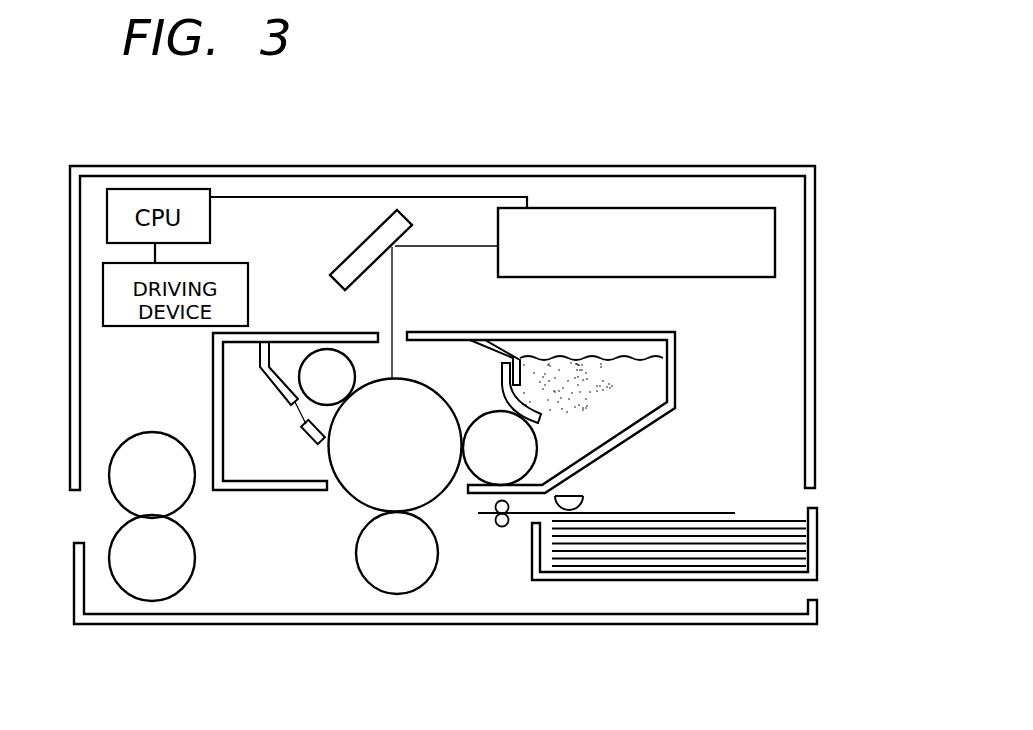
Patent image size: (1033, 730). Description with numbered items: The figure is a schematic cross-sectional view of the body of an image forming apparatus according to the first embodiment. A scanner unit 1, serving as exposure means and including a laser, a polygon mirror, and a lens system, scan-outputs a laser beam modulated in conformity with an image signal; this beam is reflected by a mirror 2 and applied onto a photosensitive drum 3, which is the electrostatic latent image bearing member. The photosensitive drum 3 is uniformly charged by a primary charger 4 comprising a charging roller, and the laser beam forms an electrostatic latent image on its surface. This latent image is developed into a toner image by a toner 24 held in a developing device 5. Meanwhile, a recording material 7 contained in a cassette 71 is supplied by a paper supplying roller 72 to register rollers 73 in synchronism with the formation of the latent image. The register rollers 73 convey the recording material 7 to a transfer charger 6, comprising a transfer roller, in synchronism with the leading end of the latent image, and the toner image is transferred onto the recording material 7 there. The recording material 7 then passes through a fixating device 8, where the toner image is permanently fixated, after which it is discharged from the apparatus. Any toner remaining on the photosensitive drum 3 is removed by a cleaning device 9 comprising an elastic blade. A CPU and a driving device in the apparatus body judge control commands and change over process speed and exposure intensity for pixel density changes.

The scanner unit 1 is at (610, 208).
The mirror 2 is at (373, 225).
The photosensitive drum 3 is at (350, 495).
The primary charger 4 is at (293, 377).
The developing device 5 is at (678, 375).
The transfer charger 6 is at (372, 593).
The recording material 7 is at (712, 513).
The fixating device 8 is at (141, 600).
The cleaning device 9 is at (313, 433).
The toner 24 is at (617, 363).
The cassette 71 is at (708, 580).
The paper supplying roller 72 is at (583, 502).
The register rollers 73 is at (500, 527).